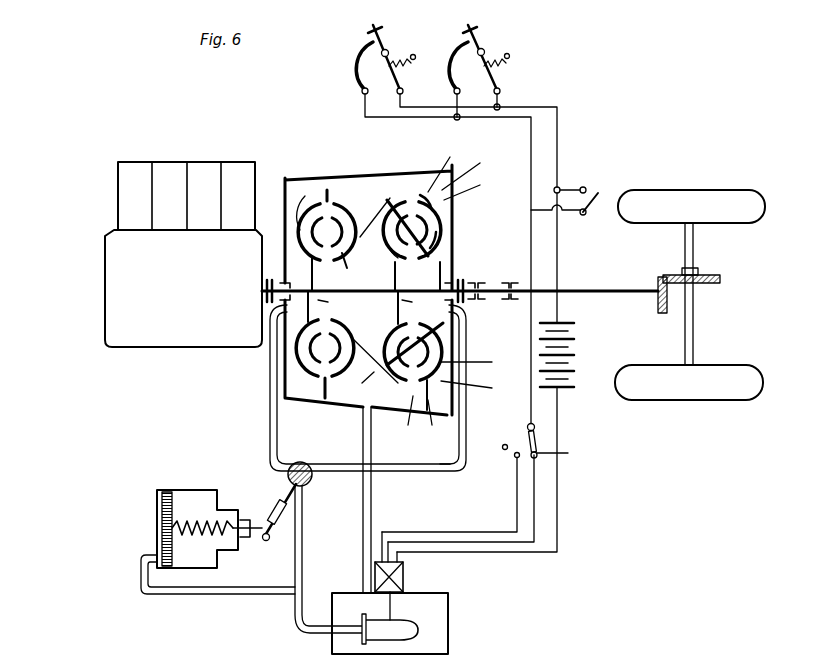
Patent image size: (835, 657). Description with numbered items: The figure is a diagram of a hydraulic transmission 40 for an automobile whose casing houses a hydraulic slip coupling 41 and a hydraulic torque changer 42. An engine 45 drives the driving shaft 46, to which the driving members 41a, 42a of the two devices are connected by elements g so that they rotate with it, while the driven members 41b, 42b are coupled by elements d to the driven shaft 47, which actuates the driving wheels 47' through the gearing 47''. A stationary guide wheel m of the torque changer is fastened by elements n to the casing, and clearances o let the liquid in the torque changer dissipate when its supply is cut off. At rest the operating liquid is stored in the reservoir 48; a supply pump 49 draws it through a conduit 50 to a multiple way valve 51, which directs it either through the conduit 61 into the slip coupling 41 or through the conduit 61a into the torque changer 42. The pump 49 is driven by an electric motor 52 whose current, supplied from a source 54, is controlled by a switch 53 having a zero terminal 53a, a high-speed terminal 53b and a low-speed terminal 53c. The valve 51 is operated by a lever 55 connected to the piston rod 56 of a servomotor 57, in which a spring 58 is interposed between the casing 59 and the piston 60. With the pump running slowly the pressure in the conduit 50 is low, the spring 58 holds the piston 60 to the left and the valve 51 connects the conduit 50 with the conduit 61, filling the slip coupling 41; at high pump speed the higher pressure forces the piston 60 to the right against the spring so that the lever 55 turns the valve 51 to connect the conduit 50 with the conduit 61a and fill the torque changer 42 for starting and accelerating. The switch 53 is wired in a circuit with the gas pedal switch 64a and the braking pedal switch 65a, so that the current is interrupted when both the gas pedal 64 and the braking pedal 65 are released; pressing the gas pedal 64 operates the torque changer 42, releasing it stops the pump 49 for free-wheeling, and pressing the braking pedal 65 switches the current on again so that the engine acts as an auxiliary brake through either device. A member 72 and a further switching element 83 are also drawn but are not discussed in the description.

The hydraulic transmission 40 is at (360, 178).
The hydraulic slip coupling 41 is at (327, 247).
The driving member of slip coupling 41a is at (304, 196).
The driven member of slip coupling 41b is at (340, 256).
The hydraulic torque changer 42 is at (446, 216).
The driving member of torque changer 42a is at (394, 253).
The driven member of torque changer 42b is at (405, 195).
The engine 45 is at (183, 254).
The driving shaft 46 is at (265, 279).
The driven shaft 47 is at (547, 276).
The driving wheels 47' is at (690, 295).
The gearing 47'' is at (700, 290).
The reservoir 48 is at (432, 610).
The supply pump 49 is at (410, 628).
The conduit 50 is at (295, 606).
The multiple way valve 51 is at (311, 481).
The electric motor 52 is at (403, 578).
The switch 53 is at (527, 428).
The zero terminal 53a is at (504, 449).
The high-speed terminal 53b is at (515, 460).
The low-speed terminal 53c is at (566, 457).
The current source 54 is at (576, 345).
The lever 55 is at (279, 508).
The piston rod 56 is at (264, 541).
The servomotor 57 is at (157, 508).
The spring 58 is at (205, 520).
The casing 59 is at (244, 522).
The piston 60 is at (167, 492).
The conduit 61 is at (270, 390).
The conduit 61a is at (437, 472).
The gas pedal 64 is at (372, 30).
The gas pedal switch 64a is at (362, 72).
The braking pedal 65 is at (467, 30).
The braking pedal switch 65a is at (458, 72).
The brake band 72 is at (330, 190).
The switch 83 is at (565, 192).
The coupling elements d is at (462, 264).
The connecting elements g is at (371, 305).
The stationary guide wheel m is at (474, 285).
The connecting elements n is at (460, 298).
The clearances o is at (427, 292).